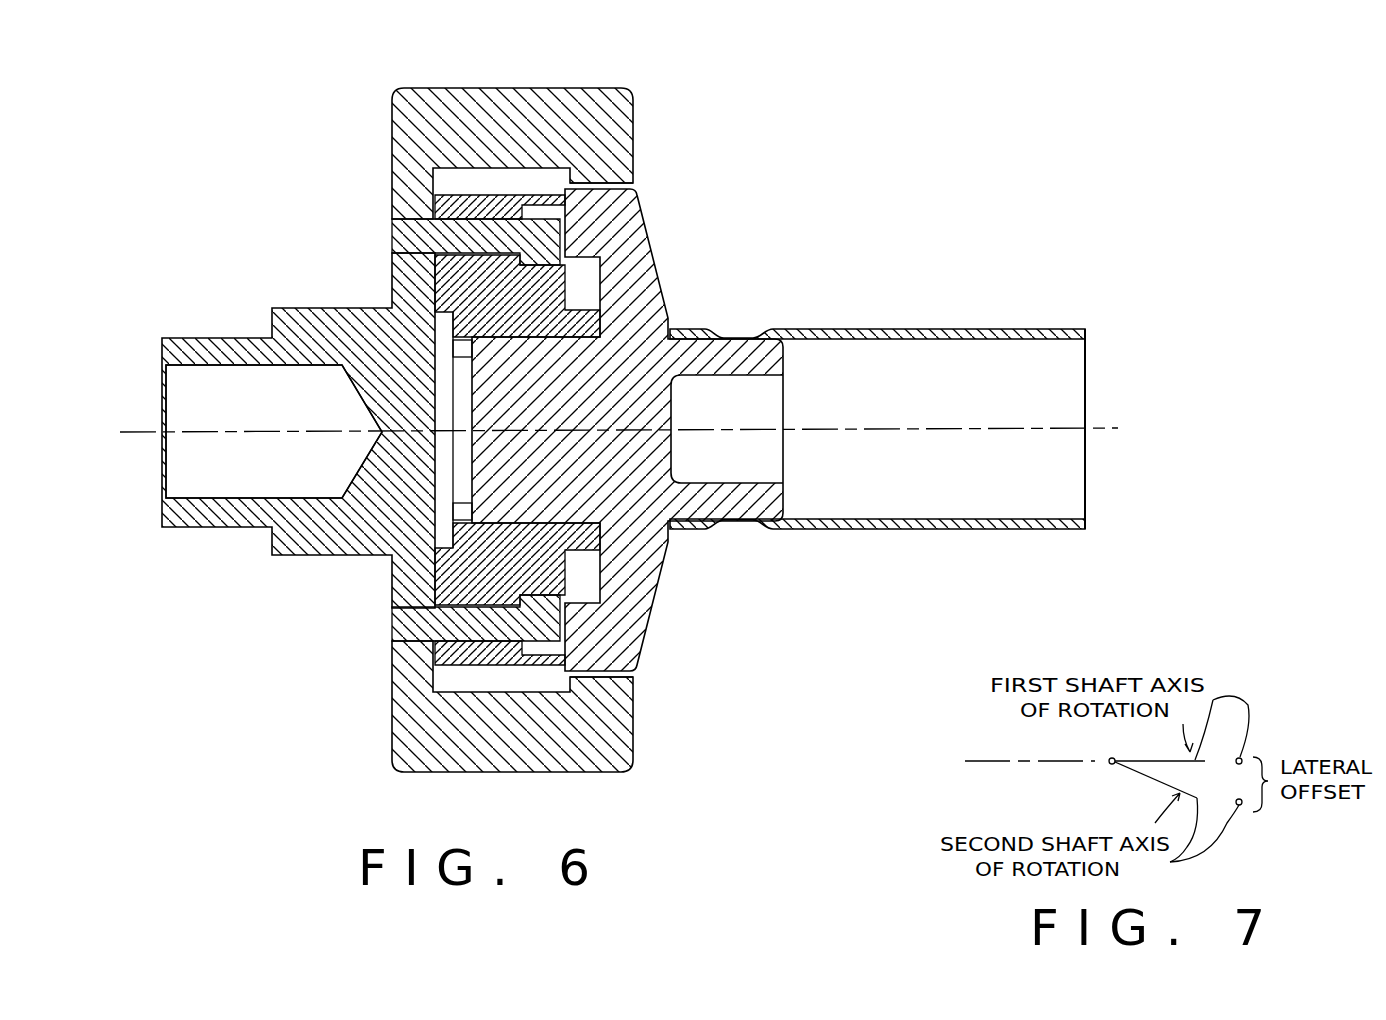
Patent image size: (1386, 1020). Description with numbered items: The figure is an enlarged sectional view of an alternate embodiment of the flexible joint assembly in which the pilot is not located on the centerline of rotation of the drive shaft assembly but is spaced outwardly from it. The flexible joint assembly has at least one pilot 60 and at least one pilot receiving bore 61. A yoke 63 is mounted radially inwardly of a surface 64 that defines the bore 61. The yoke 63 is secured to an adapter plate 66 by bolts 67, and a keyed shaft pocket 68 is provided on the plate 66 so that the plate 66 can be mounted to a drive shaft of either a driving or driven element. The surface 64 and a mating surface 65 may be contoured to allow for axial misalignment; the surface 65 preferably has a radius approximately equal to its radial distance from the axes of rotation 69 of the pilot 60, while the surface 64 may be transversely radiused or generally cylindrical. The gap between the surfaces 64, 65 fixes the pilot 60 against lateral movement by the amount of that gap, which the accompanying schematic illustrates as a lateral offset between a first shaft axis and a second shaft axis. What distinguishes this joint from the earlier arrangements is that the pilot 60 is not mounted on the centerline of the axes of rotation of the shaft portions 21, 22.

The shaft portion 21 is at (220, 337).
The shaft portion 22 is at (858, 329).
The pilot 60 is at (638, 197).
The pilot receiving bore 61 is at (637, 186).
The yoke 63 is at (438, 278).
The surface 64 is at (637, 672).
The surface 65 is at (567, 670).
The adapter plate 66 is at (392, 155).
The bolts 67 is at (476, 237).
The keyed shaft pocket 68 is at (205, 405).
The axes of rotation 69 is at (1055, 426).